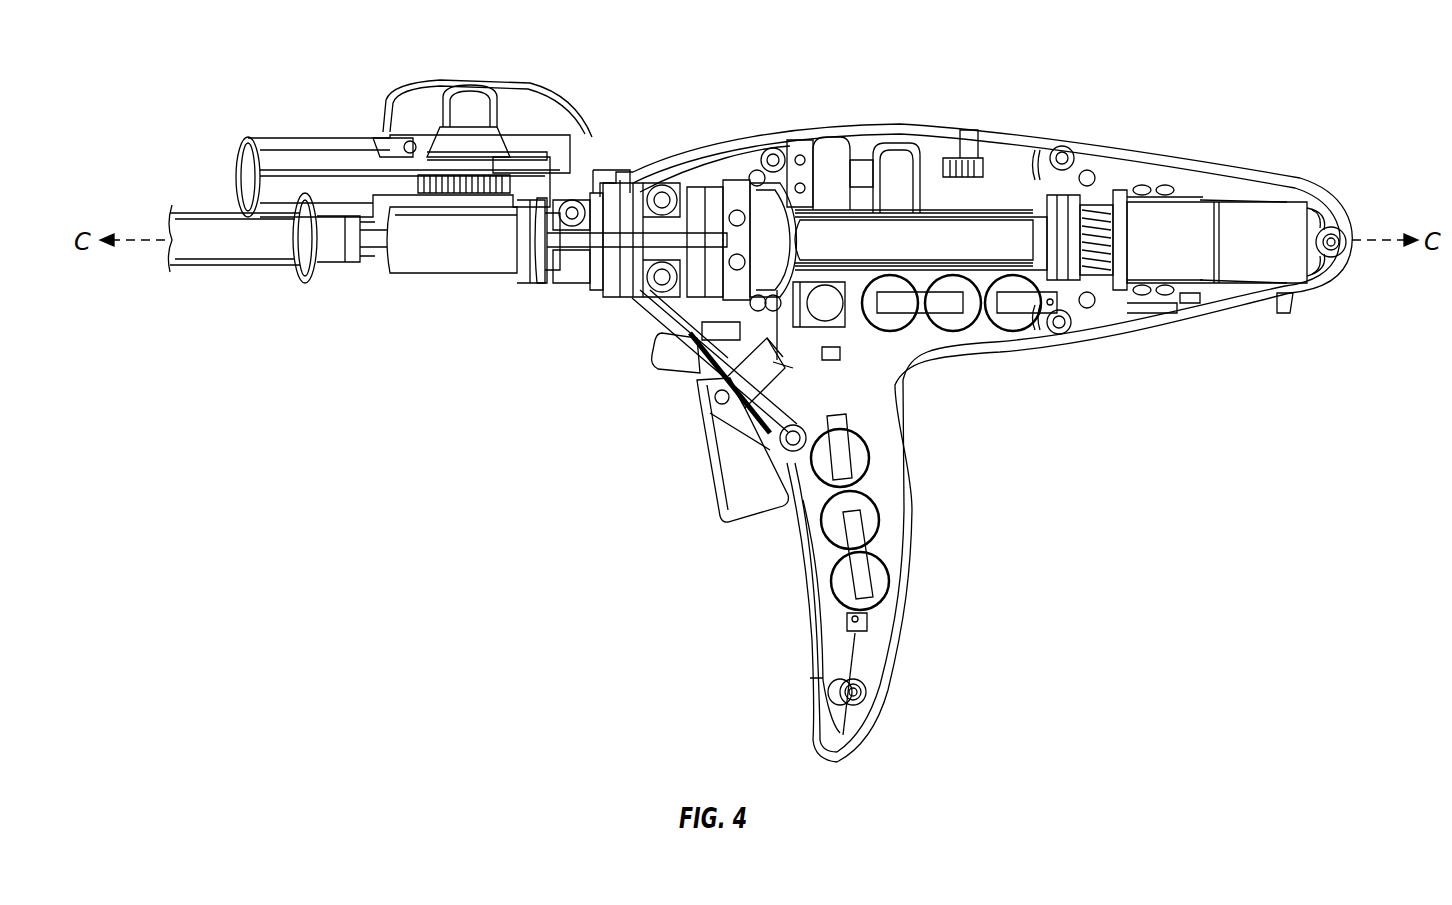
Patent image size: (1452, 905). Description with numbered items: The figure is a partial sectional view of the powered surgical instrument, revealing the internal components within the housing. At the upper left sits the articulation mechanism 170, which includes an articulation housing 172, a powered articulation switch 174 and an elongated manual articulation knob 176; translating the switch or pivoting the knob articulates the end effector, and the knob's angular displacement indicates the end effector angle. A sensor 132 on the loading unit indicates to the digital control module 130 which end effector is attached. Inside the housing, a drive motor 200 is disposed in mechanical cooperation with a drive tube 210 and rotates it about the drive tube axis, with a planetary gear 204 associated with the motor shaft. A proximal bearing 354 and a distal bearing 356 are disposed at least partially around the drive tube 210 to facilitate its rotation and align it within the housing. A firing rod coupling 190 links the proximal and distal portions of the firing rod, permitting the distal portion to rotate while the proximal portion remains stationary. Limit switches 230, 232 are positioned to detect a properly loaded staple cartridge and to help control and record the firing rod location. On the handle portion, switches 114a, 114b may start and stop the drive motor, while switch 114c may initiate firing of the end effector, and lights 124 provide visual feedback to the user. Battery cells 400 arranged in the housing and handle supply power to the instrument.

The articulation mechanism 170 is at (387, 56).
The manual articulation knob 176 is at (478, 84).
The articulation housing 172 is at (405, 145).
The sensor 132 is at (434, 269).
The limit switch 230 is at (565, 289).
The firing rod coupling 190 is at (690, 167).
The limit switch 232 is at (705, 160).
The distal bearing 356 is at (767, 148).
The powered articulation switch 174 is at (829, 133).
The drive tube 210 is at (918, 230).
The lights 124 is at (972, 129).
The proximal bearing 354 is at (1067, 217).
The drive motor 200 is at (1273, 214).
The planetary gear 204 is at (1190, 292).
The battery cells 400 is at (950, 323).
The switch 114c is at (887, 335).
The digital control module 130 is at (840, 353).
The switch 114b is at (663, 383).
The switch 114a is at (717, 492).